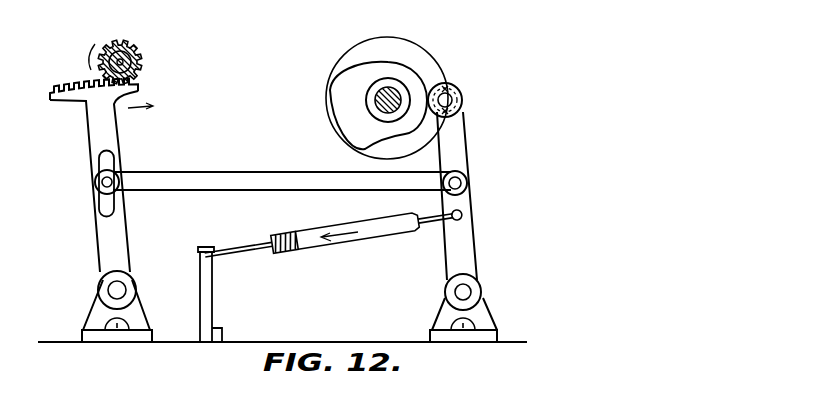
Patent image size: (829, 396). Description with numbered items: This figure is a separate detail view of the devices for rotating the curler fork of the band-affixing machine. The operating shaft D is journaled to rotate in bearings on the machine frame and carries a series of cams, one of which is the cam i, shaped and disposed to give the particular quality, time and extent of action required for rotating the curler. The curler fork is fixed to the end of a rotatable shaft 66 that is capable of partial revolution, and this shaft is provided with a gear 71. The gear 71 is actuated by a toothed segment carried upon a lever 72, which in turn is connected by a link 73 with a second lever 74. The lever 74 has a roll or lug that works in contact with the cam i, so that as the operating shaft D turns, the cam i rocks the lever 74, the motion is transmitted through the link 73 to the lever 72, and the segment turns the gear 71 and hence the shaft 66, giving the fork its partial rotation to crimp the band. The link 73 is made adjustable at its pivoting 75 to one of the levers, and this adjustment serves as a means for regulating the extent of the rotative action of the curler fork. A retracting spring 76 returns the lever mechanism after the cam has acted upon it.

The gear 71 is at (133, 54).
The shaft 66 is at (141, 63).
The lever 72 is at (97, 102).
The link 73 is at (272, 177).
The lever 74 is at (455, 146).
The pivoting 75 is at (94, 186).
The retracting spring 76 is at (335, 244).
The operating shaft D is at (370, 92).
The cam i is at (384, 101).